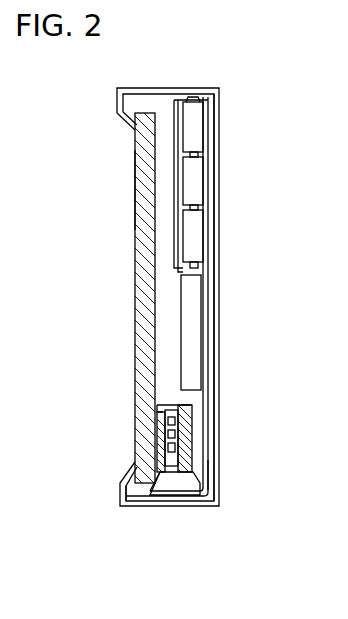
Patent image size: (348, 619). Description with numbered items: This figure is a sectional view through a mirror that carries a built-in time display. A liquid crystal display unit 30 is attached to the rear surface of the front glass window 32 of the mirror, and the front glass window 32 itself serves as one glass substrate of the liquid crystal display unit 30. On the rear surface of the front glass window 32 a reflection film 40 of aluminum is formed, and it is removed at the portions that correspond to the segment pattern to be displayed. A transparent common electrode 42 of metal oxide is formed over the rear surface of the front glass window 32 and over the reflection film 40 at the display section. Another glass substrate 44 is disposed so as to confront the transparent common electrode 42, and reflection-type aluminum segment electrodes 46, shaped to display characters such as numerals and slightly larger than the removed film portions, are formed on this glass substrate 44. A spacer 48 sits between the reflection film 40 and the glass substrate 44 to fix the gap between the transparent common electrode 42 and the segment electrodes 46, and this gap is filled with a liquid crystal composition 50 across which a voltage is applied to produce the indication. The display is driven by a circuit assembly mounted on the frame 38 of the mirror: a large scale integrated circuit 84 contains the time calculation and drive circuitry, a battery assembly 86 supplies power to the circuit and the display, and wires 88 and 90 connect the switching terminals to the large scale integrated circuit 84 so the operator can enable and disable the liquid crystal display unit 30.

The liquid crystal display unit 30 is at (145, 497).
The front glass window 32 is at (137, 248).
The frame 38 is at (212, 193).
The reflection film 40 is at (135, 187).
The transparent common electrode 42 is at (158, 425).
The glass substrate 44 is at (193, 485).
The segment electrodes 46 is at (173, 420).
The spacer 48 is at (185, 400).
The liquid crystal composition 50 is at (173, 431).
The large scale integrated circuit 84 is at (192, 322).
The battery assembly 86 is at (190, 123).
The wire 88 is at (203, 459).
The wire 90 is at (201, 478).